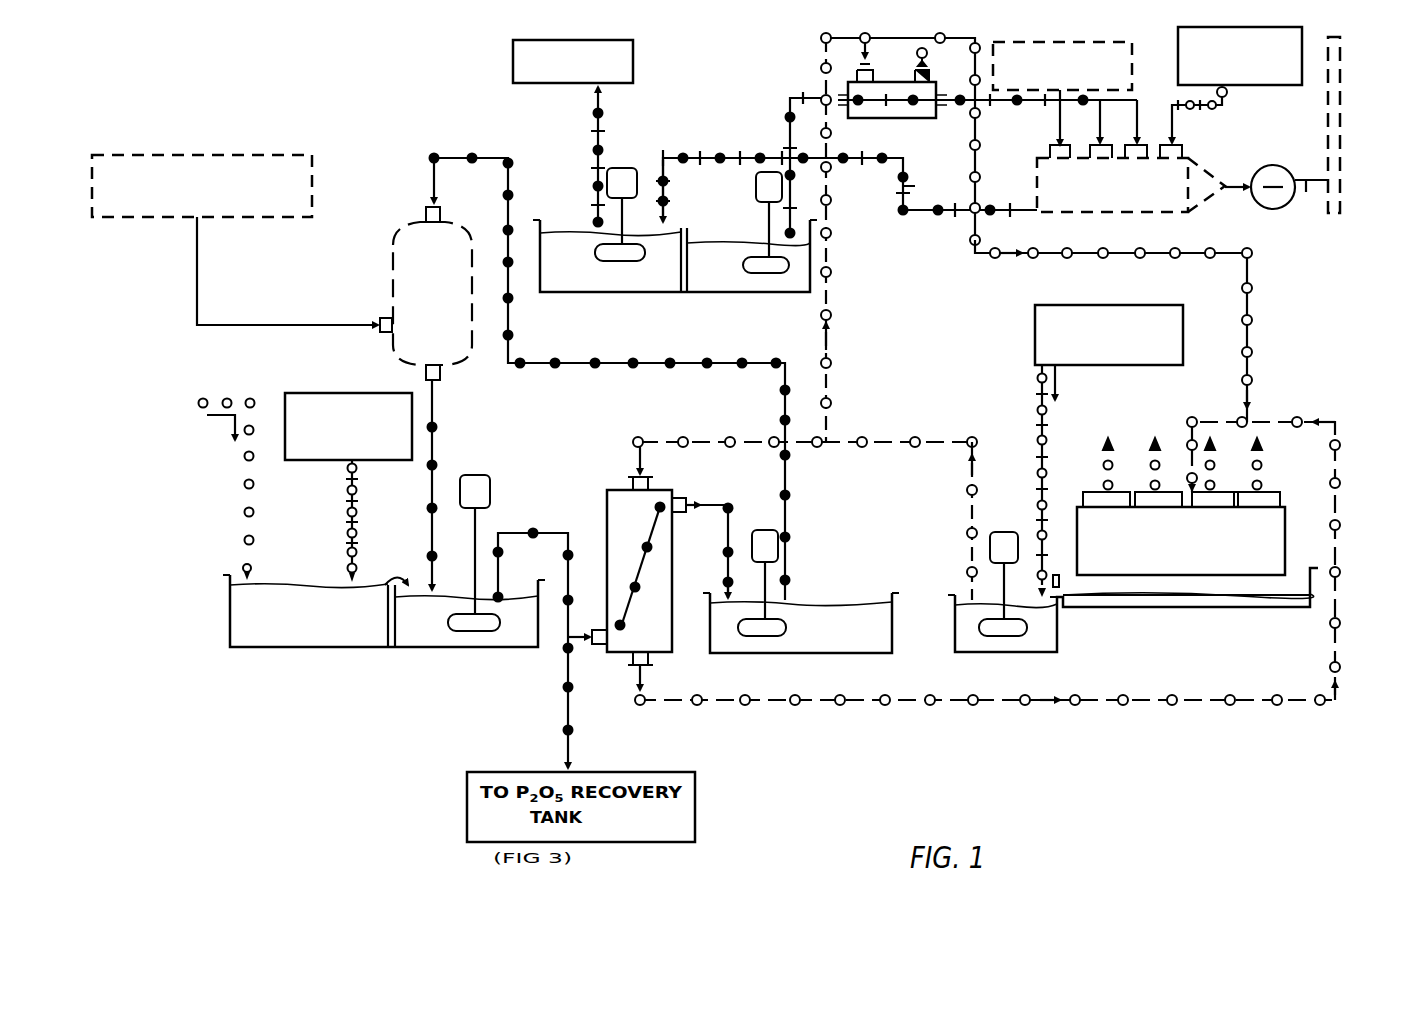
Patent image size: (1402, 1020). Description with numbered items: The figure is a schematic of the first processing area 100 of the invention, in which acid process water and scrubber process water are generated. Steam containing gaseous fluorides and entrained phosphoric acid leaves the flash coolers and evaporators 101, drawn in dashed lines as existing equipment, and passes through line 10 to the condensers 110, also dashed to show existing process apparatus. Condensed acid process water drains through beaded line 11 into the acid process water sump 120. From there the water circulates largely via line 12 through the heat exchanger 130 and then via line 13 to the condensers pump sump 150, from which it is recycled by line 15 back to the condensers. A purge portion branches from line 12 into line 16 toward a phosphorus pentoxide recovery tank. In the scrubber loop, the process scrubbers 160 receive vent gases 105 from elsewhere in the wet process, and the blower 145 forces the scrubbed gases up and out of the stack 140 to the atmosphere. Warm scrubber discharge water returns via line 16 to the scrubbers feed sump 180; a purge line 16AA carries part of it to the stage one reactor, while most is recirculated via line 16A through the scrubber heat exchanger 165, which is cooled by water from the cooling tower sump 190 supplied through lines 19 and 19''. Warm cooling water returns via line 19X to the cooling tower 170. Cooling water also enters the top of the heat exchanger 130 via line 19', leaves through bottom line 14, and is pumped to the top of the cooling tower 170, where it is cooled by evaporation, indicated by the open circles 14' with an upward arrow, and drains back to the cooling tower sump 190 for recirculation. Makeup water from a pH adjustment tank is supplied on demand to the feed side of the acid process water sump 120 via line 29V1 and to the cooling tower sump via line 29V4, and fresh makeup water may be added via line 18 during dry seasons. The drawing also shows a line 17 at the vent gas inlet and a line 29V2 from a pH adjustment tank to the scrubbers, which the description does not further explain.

The first processing area 100 is at (435, 68).
The flash coolers and evaporators 101 is at (297, 157).
The steam line 10 is at (197, 300).
The condensers 110 is at (393, 250).
The condenser recycle line 15 is at (458, 158).
The purge line 16AA is at (598, 140).
The purge/scrubber discharge water line 16 is at (668, 158).
The scrubber recirculation line 16A is at (790, 134).
The cooling water line 19'' is at (878, 237).
The scrubber heat exchanger 165 is at (895, 82).
The vent gases 105 is at (1155, 33).
The vent gas line 17 is at (1058, 133).
The process scrubbers 160 is at (1037, 197).
The pH adjustment valve 29V2 is at (1227, 92).
The blower 145 is at (1259, 172).
The stack 140 is at (1336, 213).
The scrubbers feed sump 180 is at (790, 292).
The warm cooling water return line 19X is at (1250, 342).
The fresh makeup water line 18 is at (248, 484).
The acid process water line 11 is at (432, 450).
The acid process water sump 120 is at (510, 650).
The acid process water circulation line 12 is at (500, 533).
The heat exchanger 130 is at (607, 505).
The cooling water inlet line 19' is at (805, 429).
The cooled acid process water line 13 is at (703, 505).
The cooling water supply line 19 is at (932, 498).
The condensers pump sump 150 is at (828, 652).
The cooling tower sump 190 is at (955, 640).
The makeup water line 29V1 is at (352, 533).
The makeup water line 29V4 is at (1042, 412).
The cooling tower 170 is at (1077, 507).
The evaporation indication 14' is at (1282, 464).
The cooling water outlet line 14 is at (987, 560).